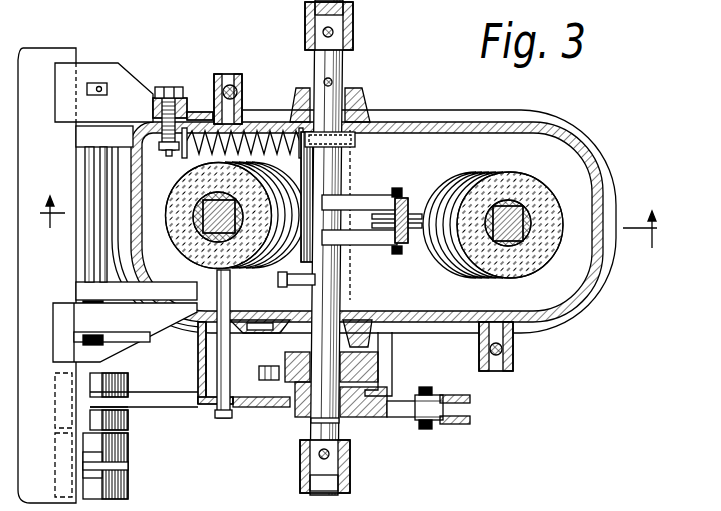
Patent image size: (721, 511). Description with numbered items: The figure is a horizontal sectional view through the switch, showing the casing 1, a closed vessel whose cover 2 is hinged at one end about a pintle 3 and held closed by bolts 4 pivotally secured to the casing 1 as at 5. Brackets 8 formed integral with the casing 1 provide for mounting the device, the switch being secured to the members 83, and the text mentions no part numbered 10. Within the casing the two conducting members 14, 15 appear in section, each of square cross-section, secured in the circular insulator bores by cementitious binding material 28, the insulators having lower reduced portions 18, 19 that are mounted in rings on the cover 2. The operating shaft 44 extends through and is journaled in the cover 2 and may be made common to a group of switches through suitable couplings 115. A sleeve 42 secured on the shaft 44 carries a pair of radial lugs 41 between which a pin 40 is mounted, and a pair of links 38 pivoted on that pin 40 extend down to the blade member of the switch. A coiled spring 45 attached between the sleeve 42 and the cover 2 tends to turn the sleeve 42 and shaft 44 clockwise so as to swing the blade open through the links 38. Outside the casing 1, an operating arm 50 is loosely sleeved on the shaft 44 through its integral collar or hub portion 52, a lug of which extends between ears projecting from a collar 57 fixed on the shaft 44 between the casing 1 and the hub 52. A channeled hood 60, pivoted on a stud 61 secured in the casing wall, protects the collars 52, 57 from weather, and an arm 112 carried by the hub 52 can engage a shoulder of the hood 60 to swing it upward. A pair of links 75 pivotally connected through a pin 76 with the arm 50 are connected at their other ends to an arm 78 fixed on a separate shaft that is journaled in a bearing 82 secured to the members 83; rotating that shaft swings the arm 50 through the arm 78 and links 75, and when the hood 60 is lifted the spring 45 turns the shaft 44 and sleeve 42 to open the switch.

The casing 1 is at (626, 180).
The cover 2 is at (563, 143).
The pintle 3 is at (88, 163).
The bolts 4 is at (242, 73).
The pivot of bolts 5 is at (214, 78).
The brackets 8 is at (68, 80).
The base 10 is at (167, 504).
The conducting member 14 is at (210, 236).
The conducting member 15 is at (496, 250).
The lower reduced portion of insulator 18 is at (184, 232).
The lower reduced portion of insulator 19 is at (503, 172).
The cementitious binding material 28 is at (233, 258).
The links 38 is at (408, 196).
The pin 40 is at (168, 86).
The lugs 41 is at (385, 243).
The sleeve 42 is at (320, 284).
The shaft 44 is at (333, 66).
The coiled spring 45 is at (266, 126).
The operating arm 50 is at (391, 405).
The collar or hub portion 52 is at (293, 415).
The collar 57 is at (375, 361).
The channeled hood 60 is at (198, 342).
The stud 61 is at (225, 370).
The links 75 is at (470, 413).
The pin 76 is at (424, 430).
The arm 78 is at (180, 404).
The bearing 82 is at (128, 467).
The members 83 is at (45, 56).
The arm 112 is at (278, 373).
The couplings 115 is at (308, 13).